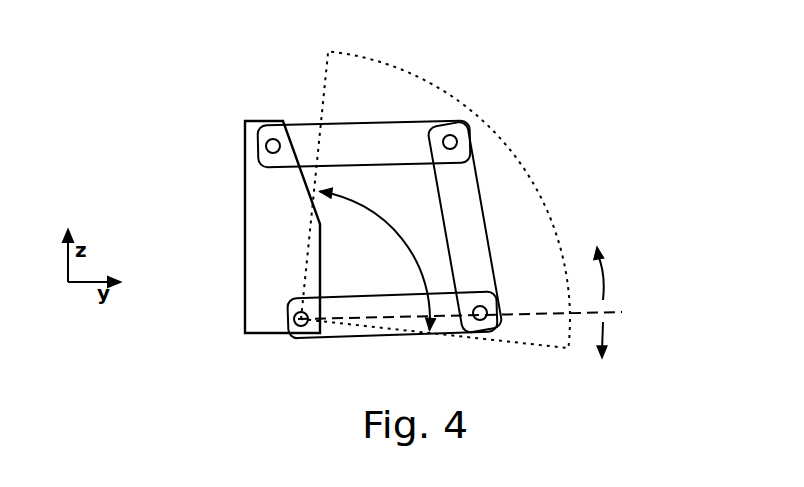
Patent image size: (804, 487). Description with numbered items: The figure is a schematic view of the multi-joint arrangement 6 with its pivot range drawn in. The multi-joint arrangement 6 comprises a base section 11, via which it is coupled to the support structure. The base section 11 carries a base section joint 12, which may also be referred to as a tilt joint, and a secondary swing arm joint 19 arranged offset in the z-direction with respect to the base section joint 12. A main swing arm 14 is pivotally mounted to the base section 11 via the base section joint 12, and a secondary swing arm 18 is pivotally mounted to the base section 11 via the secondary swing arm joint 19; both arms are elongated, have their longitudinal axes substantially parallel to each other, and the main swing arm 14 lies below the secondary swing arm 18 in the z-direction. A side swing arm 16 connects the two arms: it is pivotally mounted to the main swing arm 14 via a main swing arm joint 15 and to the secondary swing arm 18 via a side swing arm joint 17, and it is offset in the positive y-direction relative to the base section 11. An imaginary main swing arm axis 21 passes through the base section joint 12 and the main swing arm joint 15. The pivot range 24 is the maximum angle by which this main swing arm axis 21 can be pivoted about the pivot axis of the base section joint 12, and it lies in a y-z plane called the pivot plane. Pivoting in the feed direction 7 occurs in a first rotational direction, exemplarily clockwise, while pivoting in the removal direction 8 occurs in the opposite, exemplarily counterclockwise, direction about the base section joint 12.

The multi-joint arrangement 6 is at (177, 82).
The feed direction 7 is at (611, 345).
The removal direction 8 is at (607, 268).
The base section 11 is at (252, 250).
The base section joint 12 is at (297, 325).
The main swing arm 14 is at (348, 335).
The main swing arm joint 15 is at (481, 314).
The side swing arm 16 is at (470, 212).
The side swing arm joint 17 is at (450, 142).
The secondary swing arm 18 is at (378, 137).
The secondary swing arm joint 19 is at (273, 146).
The main swing arm axis 21 is at (475, 312).
The pivot range 24 is at (378, 259).